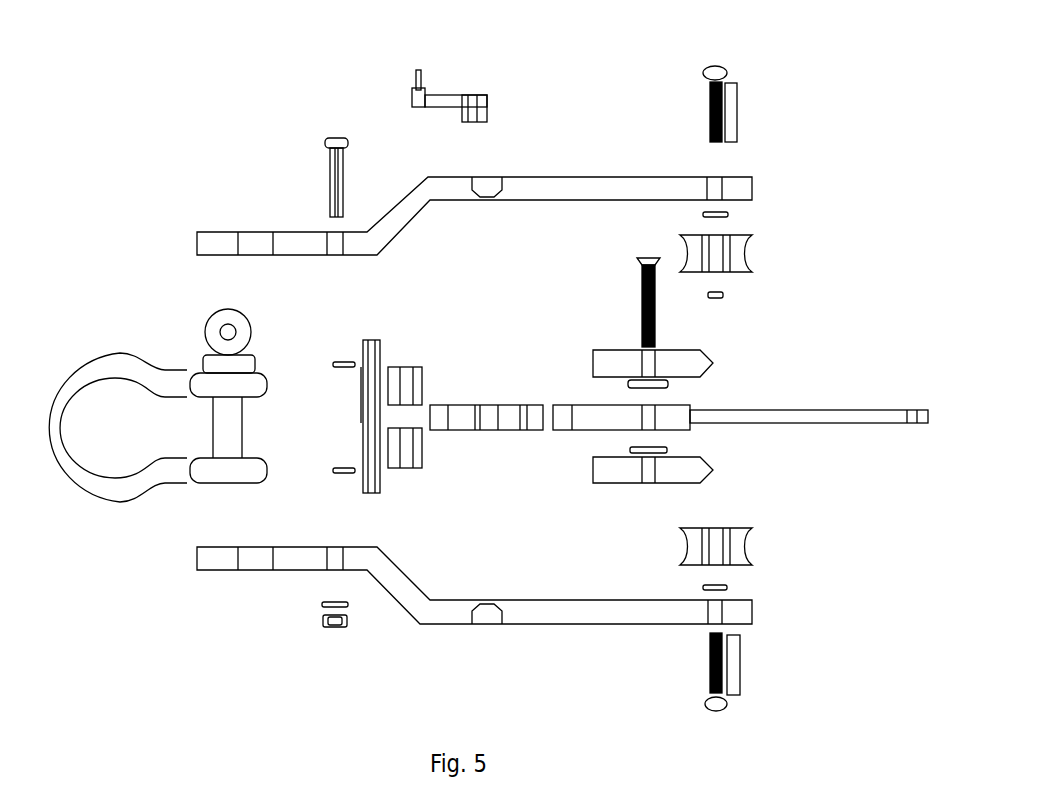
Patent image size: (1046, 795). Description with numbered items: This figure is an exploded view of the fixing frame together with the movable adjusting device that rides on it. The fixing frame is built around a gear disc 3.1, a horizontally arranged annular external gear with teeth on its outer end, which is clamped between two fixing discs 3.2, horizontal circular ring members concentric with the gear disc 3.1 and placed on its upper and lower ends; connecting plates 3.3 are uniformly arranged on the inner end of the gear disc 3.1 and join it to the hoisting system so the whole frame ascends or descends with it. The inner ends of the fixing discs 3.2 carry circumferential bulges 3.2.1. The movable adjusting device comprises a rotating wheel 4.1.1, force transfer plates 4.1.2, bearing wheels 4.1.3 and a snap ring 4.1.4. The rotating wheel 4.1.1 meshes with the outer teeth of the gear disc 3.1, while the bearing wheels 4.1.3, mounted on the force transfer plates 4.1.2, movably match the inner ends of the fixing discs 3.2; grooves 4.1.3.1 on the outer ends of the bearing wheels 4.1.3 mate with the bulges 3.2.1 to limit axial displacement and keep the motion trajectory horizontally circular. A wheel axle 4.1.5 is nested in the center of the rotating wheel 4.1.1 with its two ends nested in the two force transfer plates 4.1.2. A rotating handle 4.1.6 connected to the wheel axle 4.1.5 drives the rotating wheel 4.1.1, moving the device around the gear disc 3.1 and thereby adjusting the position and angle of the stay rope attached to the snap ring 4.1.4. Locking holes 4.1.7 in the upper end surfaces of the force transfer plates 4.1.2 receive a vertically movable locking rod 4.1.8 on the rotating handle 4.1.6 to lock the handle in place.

The gear disc 3.1 is at (690, 425).
The fixing discs 3.2 is at (612, 360).
The bulges 3.2.1 is at (715, 363).
The connecting plates 3.3 is at (808, 425).
The rotating wheel 4.1.1 is at (440, 405).
The force transfer plates 4.1.2 is at (593, 175).
The bearing wheels 4.1.3 is at (743, 272).
The grooves 4.1.3.1 is at (747, 247).
The snap ring 4.1.4 is at (165, 370).
The wheel axle 4.1.5 is at (367, 350).
The rotating handle 4.1.6 is at (482, 90).
The locking holes 4.1.7 is at (432, 177).
The locking rod 4.1.8 is at (418, 82).